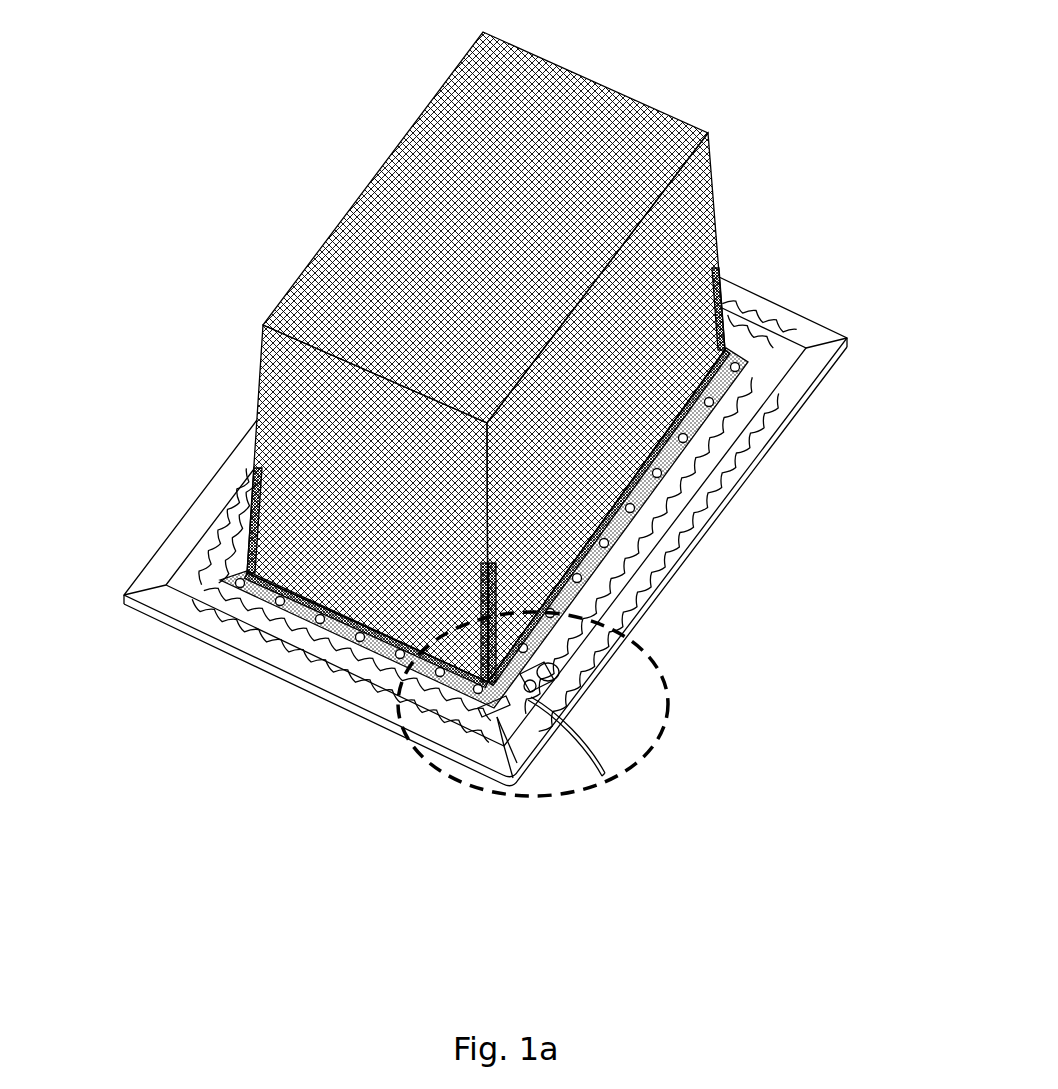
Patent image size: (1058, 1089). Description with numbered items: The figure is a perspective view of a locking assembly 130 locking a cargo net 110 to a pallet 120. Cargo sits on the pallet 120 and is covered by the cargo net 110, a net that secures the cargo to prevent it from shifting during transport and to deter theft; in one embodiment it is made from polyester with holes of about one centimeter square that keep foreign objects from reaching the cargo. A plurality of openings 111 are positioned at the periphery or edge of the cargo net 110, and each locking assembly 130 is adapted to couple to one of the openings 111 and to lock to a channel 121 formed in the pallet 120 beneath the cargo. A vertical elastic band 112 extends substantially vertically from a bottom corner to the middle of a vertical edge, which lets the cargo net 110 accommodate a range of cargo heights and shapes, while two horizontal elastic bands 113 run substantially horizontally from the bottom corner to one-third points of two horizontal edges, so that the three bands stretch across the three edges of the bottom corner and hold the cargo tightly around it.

The cargo net 110 is at (578, 70).
The openings 111 is at (414, 646).
The vertical elastic band 112 is at (717, 293).
The horizontal elastic bands 113 is at (655, 447).
The pallet 120 is at (232, 663).
The channel 121 is at (737, 432).
The locking assembly 130 is at (570, 708).